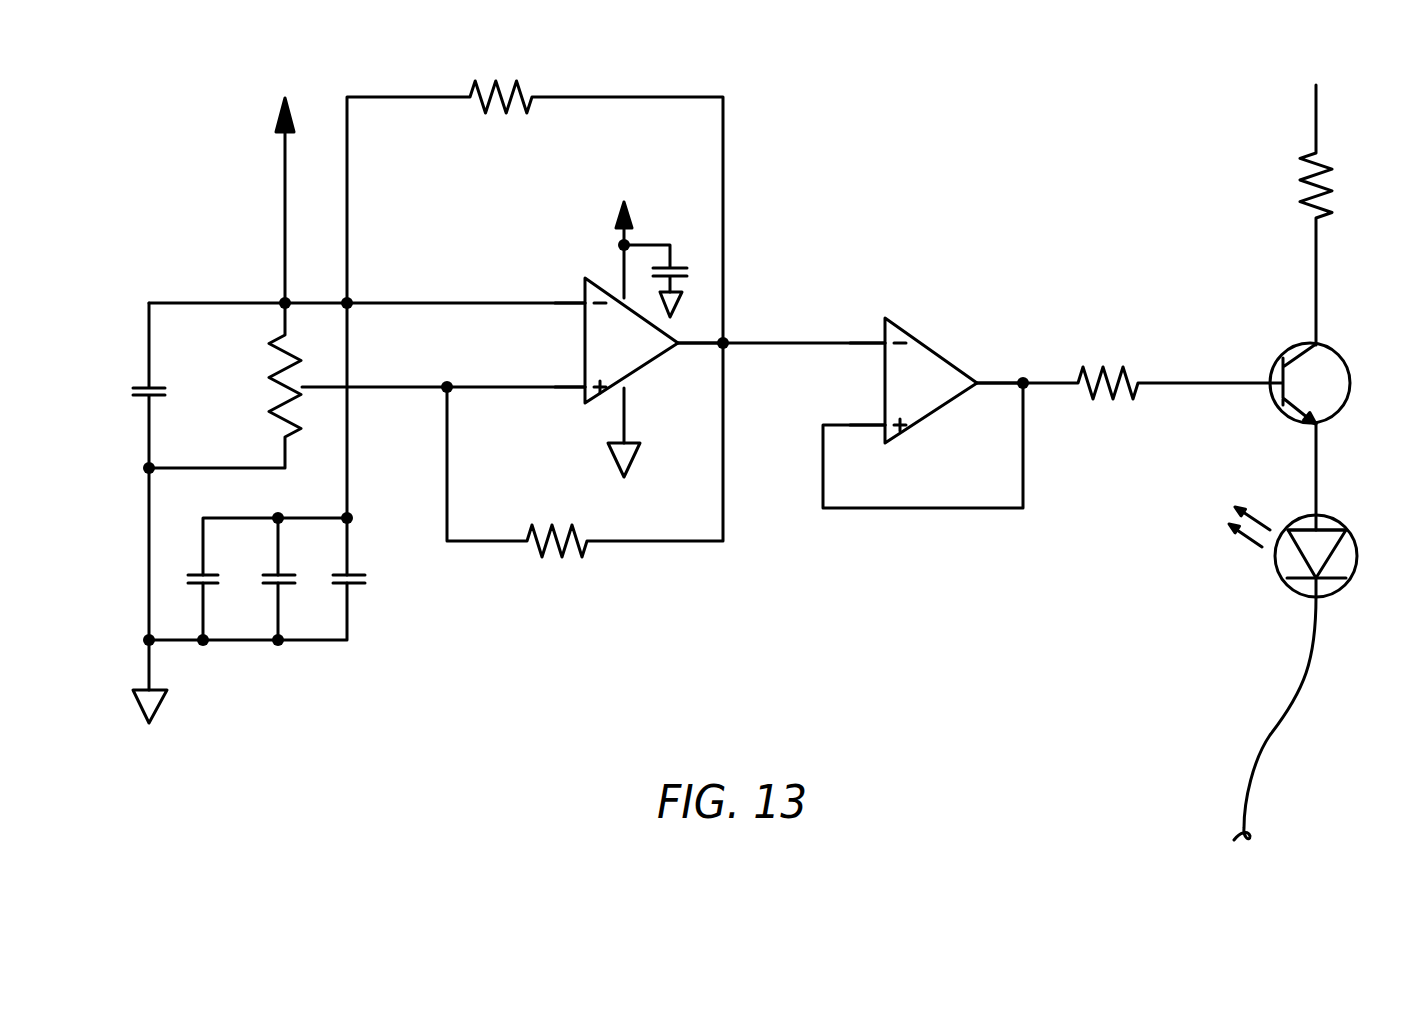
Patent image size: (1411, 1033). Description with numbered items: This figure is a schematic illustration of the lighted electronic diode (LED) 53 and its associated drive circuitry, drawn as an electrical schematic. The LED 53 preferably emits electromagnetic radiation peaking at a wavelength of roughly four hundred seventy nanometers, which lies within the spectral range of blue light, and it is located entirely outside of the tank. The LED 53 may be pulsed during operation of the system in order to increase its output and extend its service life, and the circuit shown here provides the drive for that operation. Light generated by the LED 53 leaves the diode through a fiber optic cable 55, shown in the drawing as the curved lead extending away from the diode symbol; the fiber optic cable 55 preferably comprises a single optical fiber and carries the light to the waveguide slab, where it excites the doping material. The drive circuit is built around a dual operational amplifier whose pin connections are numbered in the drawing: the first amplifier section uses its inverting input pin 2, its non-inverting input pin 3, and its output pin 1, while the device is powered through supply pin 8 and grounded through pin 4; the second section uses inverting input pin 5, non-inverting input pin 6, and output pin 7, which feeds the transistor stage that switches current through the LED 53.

The lighted electronic diode (LED) 53 is at (935, 82).
The fiber optic cable 55 is at (1262, 760).
The op-amp U1A output pin 1 is at (700, 330).
The op-amp U1A inverting input pin 2 is at (580, 287).
The op-amp U1A non-inverting input pin 3 is at (580, 374).
The op-amp ground pin 4 is at (628, 426).
The op-amp U1B inverting input pin 5 is at (877, 323).
The op-amp U1B non-inverting input pin 6 is at (877, 408).
The op-amp U1B output pin 7 is at (1000, 363).
The op-amp supply pin 8 is at (616, 250).